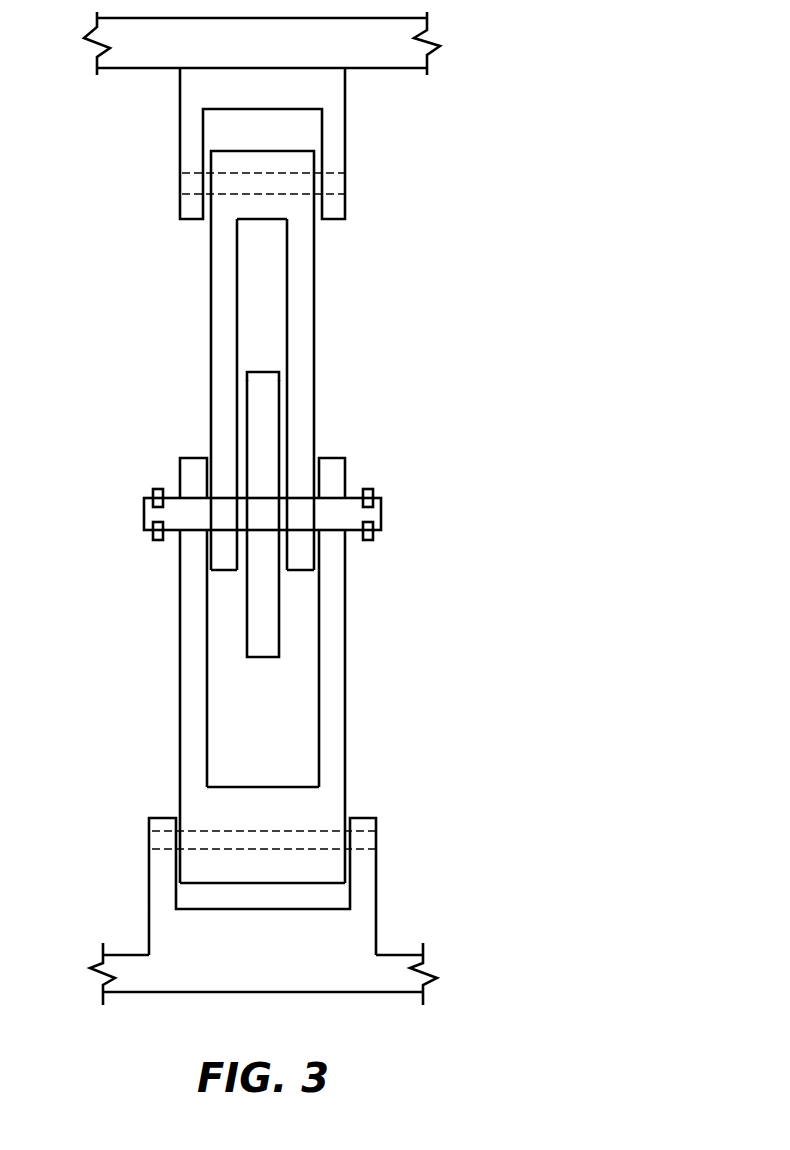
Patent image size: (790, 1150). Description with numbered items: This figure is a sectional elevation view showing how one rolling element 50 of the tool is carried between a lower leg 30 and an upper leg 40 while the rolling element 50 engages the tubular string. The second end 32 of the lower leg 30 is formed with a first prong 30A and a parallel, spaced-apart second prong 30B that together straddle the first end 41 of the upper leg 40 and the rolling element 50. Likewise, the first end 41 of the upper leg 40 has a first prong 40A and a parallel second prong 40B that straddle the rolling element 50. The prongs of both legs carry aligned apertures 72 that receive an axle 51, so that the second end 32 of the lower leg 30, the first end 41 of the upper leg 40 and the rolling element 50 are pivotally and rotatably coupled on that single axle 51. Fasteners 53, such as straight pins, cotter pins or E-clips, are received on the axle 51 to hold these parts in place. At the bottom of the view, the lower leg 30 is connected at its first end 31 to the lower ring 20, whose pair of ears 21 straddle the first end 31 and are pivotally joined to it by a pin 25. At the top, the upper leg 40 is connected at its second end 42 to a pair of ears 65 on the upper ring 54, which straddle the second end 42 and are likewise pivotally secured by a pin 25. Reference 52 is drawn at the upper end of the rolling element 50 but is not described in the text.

The lower ring 20 is at (265, 873).
The pair of ears 21 is at (150, 825).
The pin 25 is at (296, 195).
The lower leg 30 is at (274, 718).
The first prong 30A is at (181, 680).
The second prong 30B is at (347, 657).
The first end 31 is at (335, 865).
The second end 32 is at (347, 472).
The upper leg 40 is at (274, 388).
The first prong 40A is at (210, 290).
The second prong 40B is at (314, 359).
The first end 41 is at (307, 572).
The second end 42 is at (307, 161).
The rolling element 50 is at (265, 479).
The axle 51 is at (382, 519).
The rod upper end 52 is at (262, 372).
The fasteners 53 is at (373, 493).
The upper ring 54 is at (179, 113).
The pair of ears 65 is at (181, 173).
The aligned apertures 72 is at (265, 523).